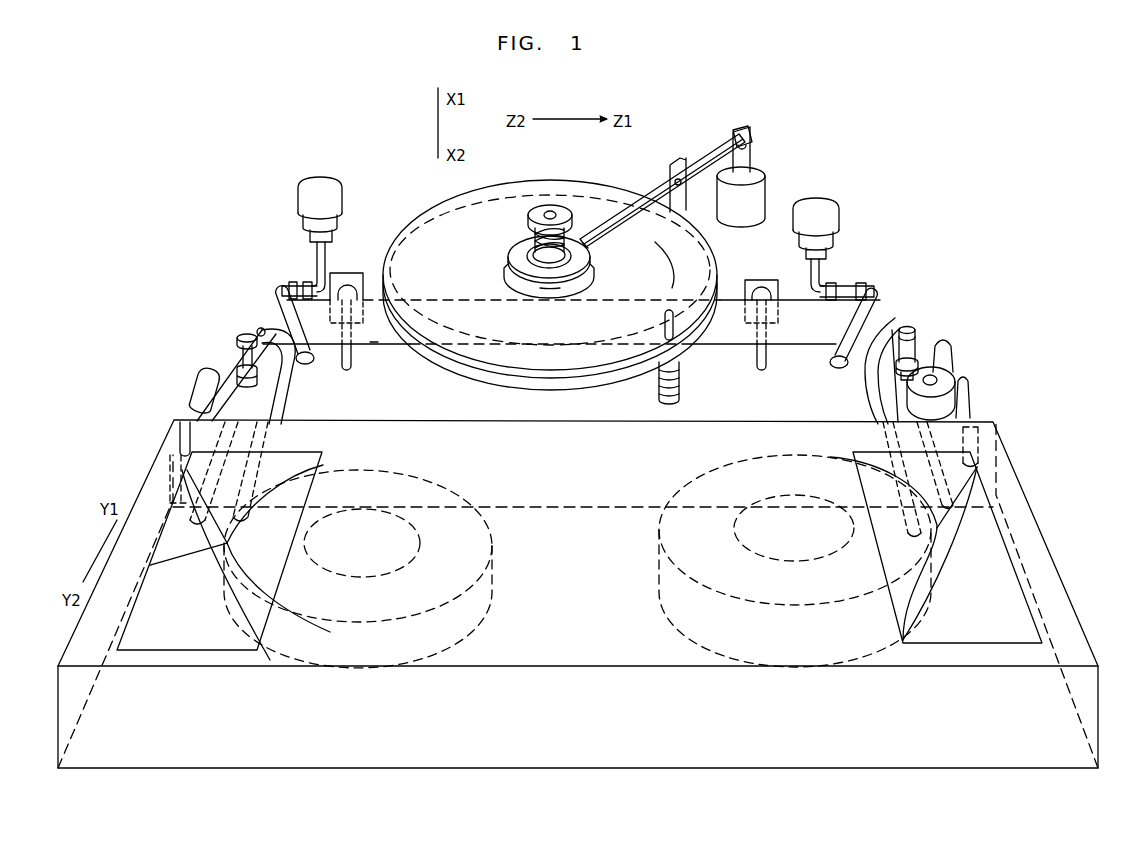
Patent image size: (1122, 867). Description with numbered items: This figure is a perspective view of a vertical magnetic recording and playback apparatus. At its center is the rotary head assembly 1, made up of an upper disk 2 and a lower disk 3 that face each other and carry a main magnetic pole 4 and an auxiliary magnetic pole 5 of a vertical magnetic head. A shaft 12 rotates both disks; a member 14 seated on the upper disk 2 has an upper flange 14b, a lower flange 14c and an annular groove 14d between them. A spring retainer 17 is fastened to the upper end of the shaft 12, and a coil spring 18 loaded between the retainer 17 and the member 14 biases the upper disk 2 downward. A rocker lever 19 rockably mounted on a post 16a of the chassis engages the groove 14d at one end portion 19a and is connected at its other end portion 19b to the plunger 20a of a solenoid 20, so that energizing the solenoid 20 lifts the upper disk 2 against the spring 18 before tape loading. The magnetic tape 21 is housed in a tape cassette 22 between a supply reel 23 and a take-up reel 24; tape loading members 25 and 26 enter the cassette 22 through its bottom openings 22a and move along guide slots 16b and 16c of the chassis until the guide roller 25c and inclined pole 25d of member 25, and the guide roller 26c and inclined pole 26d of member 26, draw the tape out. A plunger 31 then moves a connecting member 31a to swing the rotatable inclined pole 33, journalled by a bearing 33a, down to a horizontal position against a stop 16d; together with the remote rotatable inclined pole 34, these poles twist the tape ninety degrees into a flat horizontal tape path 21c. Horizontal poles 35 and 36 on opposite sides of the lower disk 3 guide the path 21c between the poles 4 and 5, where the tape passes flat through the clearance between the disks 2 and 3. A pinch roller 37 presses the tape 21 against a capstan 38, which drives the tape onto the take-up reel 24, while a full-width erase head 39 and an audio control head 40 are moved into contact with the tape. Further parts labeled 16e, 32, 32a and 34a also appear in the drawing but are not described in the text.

The rotary head assembly 1 is at (733, 263).
The upper disk 2 is at (462, 368).
The lower disk 3 is at (508, 381).
The main magnetic pole 4 is at (660, 326).
The auxiliary magnetic pole 5 is at (681, 384).
The shaft 12 is at (551, 212).
The member 14 is at (502, 264).
The upper flange 14b is at (508, 283).
The lower flange 14c is at (530, 301).
The annular recess or groove 14d is at (553, 292).
The post 16a is at (668, 160).
The guide slot 16b is at (288, 399).
The guide slot 16c is at (268, 452).
The stop 16d is at (836, 366).
The left pivot foot 16e is at (306, 366).
The spring retainer 17 is at (527, 219).
The coil spring 18 is at (533, 249).
The rocker lever 19 is at (698, 152).
The end portion 19a is at (600, 252).
The end portion 19b is at (723, 132).
The solenoid 20 is at (752, 196).
The plunger 20a is at (752, 152).
The magnetic tape 21 is at (722, 352).
The horizontal tape path 21c is at (378, 346).
The tape cassette 22 is at (1062, 566).
The bottom openings 22a is at (173, 517).
The supply reel 23 is at (490, 604).
The take-up reel 24 is at (660, 618).
The tape loading member 25 is at (912, 331).
The guide roller 25c is at (918, 337).
The inclined pole 25d is at (910, 318).
The tape loading member 26 is at (237, 354).
The guide roller 26c is at (238, 340).
The inclined pole 26d is at (258, 334).
The plunger 31 is at (831, 216).
The connecting member 31a is at (830, 263).
The left motor 32 is at (338, 202).
The left motor shaft 32a is at (336, 258).
The rotatable inclined pole 33 is at (842, 311).
The bearing 33a is at (880, 280).
The rotatable inclined pole 34 is at (280, 300).
The left arm collar 34a is at (294, 288).
The horizontal pole 35 is at (762, 370).
The horizontal pole 36 is at (352, 382).
The pinch roller 37 is at (880, 394).
The capstan 38 is at (956, 389).
The full-width erase head 39 is at (196, 376).
The audio control head 40 is at (952, 362).